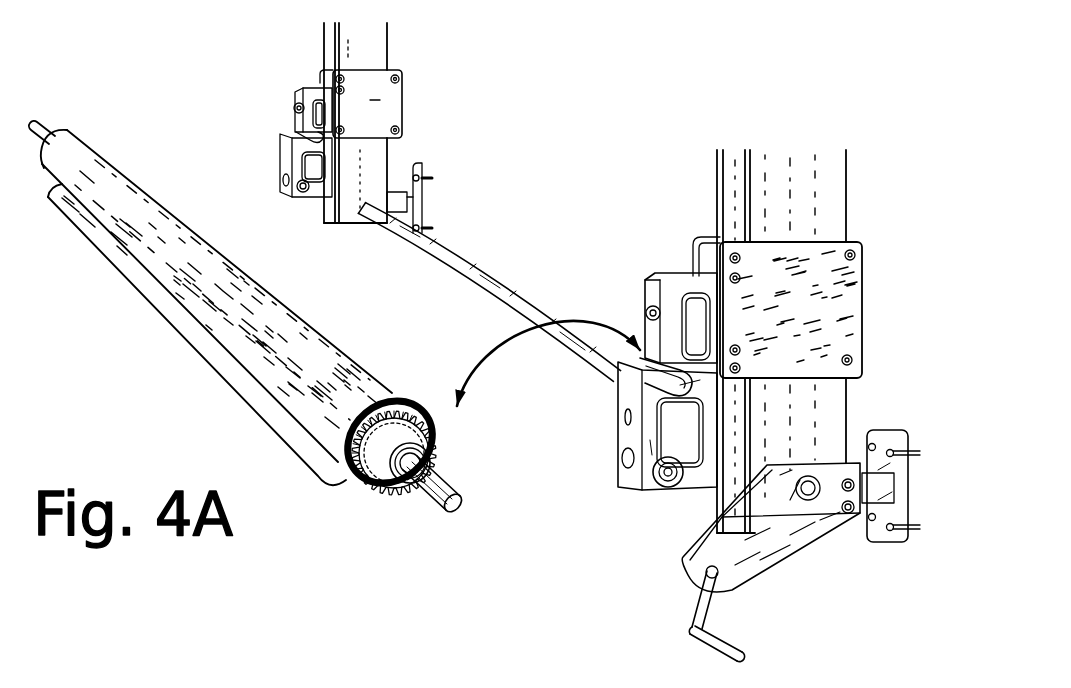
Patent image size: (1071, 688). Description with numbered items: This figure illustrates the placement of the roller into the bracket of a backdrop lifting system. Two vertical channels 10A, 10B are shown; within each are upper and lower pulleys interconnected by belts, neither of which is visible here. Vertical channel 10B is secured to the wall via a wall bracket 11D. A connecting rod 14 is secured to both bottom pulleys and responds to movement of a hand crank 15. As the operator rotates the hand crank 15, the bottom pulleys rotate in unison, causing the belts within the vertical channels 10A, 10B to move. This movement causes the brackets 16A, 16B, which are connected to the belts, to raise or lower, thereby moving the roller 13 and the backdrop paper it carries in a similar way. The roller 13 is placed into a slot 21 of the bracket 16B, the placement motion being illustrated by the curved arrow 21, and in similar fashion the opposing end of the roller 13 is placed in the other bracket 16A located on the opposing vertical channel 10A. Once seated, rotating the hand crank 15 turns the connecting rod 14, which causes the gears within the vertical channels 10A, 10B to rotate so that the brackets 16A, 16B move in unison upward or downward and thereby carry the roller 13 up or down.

The vertical channel 10A is at (336, 43).
The vertical channel 10B is at (792, 157).
The bracket 16A is at (283, 150).
The bracket 16B is at (642, 463).
The connecting rod 14 is at (485, 277).
The slot 21 is at (642, 350).
The roller 13 is at (425, 490).
The hand crank 15 is at (740, 632).
The wall bracket 11D is at (887, 437).